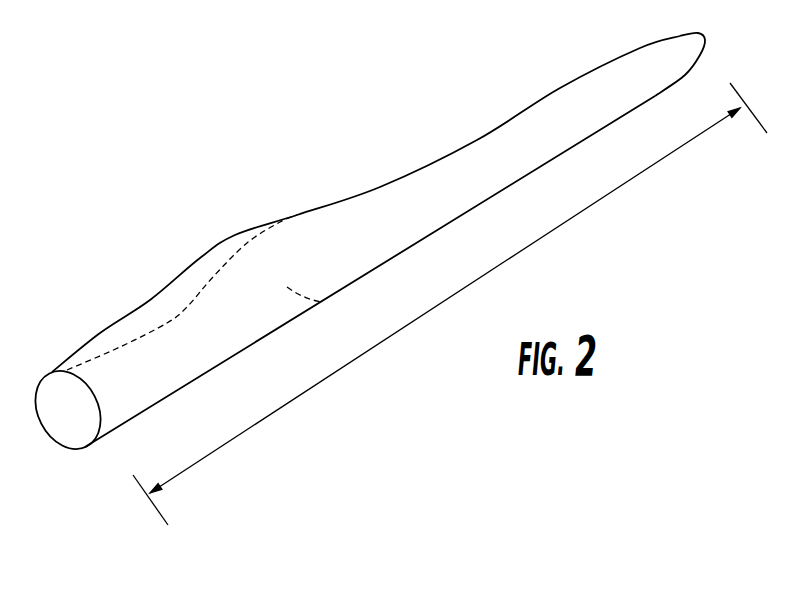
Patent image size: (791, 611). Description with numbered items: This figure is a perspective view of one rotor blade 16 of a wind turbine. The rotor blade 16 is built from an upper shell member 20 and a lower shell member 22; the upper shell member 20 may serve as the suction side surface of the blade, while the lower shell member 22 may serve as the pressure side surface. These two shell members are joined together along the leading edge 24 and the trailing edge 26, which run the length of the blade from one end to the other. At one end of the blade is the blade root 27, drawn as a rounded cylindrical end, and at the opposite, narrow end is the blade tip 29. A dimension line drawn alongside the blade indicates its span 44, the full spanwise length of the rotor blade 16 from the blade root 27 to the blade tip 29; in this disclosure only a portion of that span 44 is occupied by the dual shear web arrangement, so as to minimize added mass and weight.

The rotor blade 16 is at (364, 233).
The upper shell member 20 is at (214, 301).
The lower shell member 22 is at (323, 302).
The leading edge 24 is at (457, 217).
The trailing edge 26 is at (477, 142).
The blade root 27 is at (103, 373).
The blade tip 29 is at (682, 47).
The span 44 is at (287, 410).